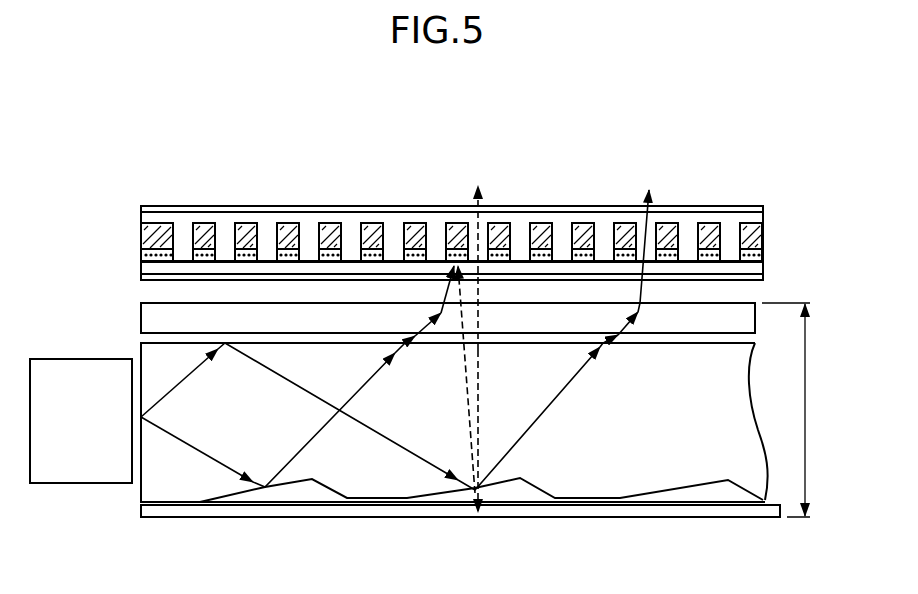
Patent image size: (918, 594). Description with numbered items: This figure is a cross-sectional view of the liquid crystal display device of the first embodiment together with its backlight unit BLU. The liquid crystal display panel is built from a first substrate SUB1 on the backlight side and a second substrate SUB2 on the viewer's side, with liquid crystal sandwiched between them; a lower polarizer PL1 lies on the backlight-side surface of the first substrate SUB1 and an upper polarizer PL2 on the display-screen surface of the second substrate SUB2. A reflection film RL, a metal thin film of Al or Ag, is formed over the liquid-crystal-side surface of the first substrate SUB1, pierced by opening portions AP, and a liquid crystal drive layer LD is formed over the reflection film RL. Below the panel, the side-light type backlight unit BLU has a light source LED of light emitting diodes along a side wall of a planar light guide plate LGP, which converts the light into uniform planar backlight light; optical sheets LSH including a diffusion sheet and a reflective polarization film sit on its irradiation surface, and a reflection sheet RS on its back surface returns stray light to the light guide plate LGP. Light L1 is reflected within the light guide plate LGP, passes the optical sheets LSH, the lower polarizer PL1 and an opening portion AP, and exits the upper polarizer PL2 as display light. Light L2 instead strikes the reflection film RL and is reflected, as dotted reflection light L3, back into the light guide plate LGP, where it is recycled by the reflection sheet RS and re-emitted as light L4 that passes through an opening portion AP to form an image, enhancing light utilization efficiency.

The liquid crystal drive layer LD is at (141, 233).
The reflection film RL is at (141, 252).
The opening portion AP is at (310, 187).
The first substrate SUB1 is at (141, 263).
The second substrate SUB2 is at (715, 211).
The lower polarizer PL1 is at (141, 276).
The upper polarizer PL2 is at (527, 207).
The optical sheets LSH is at (141, 318).
The light source LED is at (81, 421).
The light guide plate LGP is at (588, 483).
The reflection sheet RS is at (312, 512).
The backlight unit BLU is at (811, 410).
The arrow L1 is at (258, 365).
The arrow L2 is at (225, 462).
The reflection light L3 is at (470, 408).
The arrow L4 is at (480, 368).